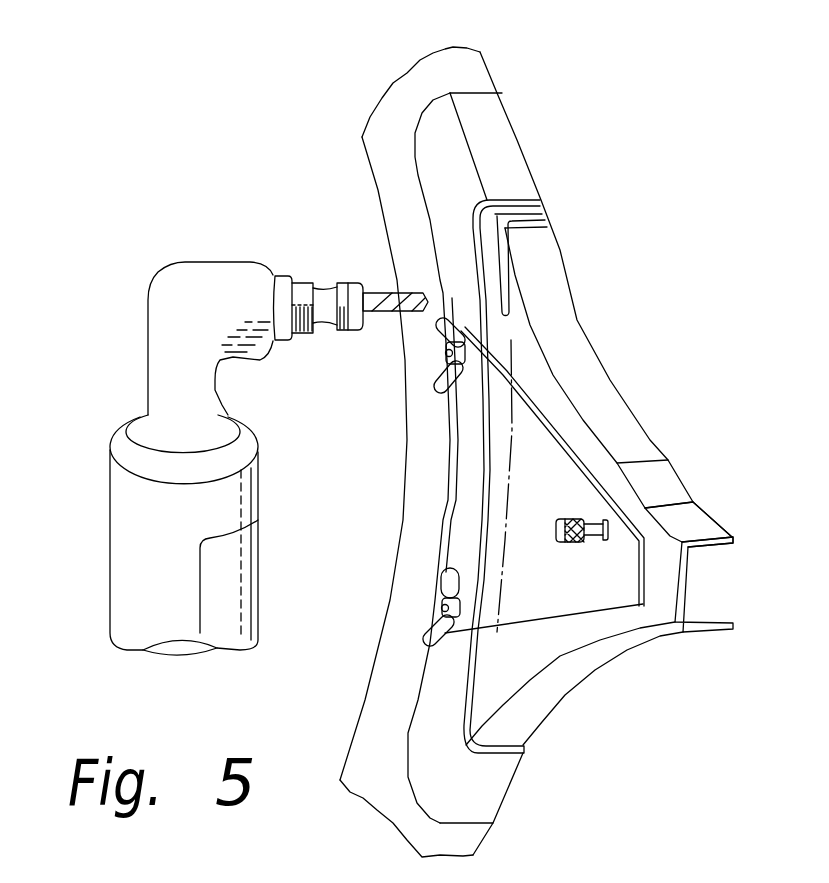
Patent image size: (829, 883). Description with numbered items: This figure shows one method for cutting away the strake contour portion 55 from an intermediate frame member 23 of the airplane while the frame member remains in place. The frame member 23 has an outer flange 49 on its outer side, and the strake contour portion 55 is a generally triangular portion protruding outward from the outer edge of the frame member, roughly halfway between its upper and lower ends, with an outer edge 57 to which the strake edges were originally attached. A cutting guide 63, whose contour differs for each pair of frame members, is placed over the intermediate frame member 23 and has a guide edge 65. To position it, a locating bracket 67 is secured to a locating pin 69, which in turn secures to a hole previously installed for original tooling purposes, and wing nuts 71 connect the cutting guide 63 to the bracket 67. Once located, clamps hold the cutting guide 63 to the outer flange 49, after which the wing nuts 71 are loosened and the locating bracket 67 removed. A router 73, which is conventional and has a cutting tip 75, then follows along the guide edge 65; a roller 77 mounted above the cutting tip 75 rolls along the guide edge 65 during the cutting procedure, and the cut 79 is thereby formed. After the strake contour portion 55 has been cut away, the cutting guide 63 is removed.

The intermediate frame member 23 is at (497, 62).
The cutting guide 63 is at (500, 128).
The guide edge 65 is at (540, 200).
The cut 79 is at (542, 214).
The outer edge 57 is at (737, 537).
The strake contour portion 55 is at (660, 620).
The locating pin 69 is at (575, 548).
The locating bracket 67 is at (528, 598).
The outer flange 49 is at (470, 838).
The wing nuts 71 is at (447, 582).
The router 73 is at (152, 555).
The roller 77 is at (344, 331).
The cutting tip 75 is at (398, 312).